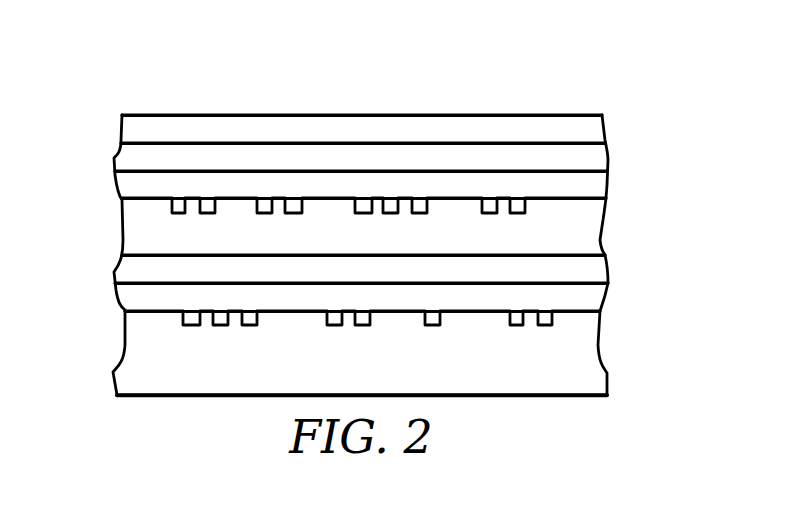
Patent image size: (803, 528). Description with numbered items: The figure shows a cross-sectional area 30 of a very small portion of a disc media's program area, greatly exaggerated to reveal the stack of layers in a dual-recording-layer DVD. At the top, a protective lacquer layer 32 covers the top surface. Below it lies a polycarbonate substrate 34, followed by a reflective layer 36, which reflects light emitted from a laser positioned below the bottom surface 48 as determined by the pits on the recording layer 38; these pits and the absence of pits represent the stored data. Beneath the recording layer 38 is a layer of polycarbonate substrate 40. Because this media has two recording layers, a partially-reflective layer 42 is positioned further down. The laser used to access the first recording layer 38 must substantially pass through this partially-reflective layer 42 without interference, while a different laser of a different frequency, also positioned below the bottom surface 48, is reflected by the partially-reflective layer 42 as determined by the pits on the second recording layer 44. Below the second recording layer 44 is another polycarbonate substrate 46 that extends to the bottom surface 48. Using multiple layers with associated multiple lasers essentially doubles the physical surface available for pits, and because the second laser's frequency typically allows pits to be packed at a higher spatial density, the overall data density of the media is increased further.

The cross-sectional area 30 is at (273, 76).
The protective lacquer layer 32 is at (458, 115).
The polycarbonate substrate 34 is at (606, 134).
The reflective layer 36 is at (114, 160).
The recording layer 38 is at (607, 190).
The polycarbonate substrate 40 is at (122, 227).
The partially-reflective layer 42 is at (607, 265).
The second recording layer 44 is at (115, 300).
The polycarbonate substrate 46 is at (607, 375).
The bottom surface 48 is at (193, 396).